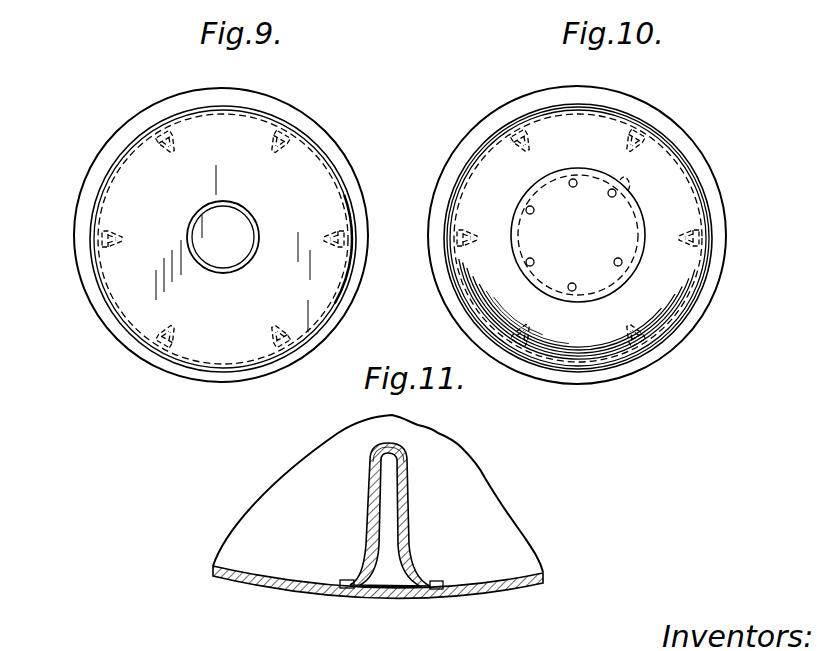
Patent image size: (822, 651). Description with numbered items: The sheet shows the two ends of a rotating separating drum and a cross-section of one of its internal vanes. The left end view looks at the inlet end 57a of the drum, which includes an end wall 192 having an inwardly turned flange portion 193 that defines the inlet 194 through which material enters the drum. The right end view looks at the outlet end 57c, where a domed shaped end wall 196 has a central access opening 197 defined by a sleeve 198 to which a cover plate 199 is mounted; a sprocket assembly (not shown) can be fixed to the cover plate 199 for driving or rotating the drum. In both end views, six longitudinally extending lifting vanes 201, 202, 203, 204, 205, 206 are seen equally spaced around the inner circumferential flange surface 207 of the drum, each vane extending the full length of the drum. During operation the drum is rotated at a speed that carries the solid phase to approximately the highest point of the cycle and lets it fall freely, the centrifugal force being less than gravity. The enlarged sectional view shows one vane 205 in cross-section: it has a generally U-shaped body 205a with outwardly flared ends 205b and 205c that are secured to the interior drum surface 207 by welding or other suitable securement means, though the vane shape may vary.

In FIG. 9, the end wall 192 is at (201, 353).
In FIG. 9, the inwardly turned flange portion 193 is at (222, 264).
In FIG. 9, the inlet 194 is at (245, 222).
In FIG. 10, the domed shaped end wall 196 is at (501, 172).
In FIG. 10, the central access opening 197 is at (628, 190).
In FIG. 10, the sleeve 198 is at (691, 168).
In FIG. 10, the cover plate 199 is at (594, 231).
In FIG. 9, the lifting vane 201 is at (176, 144).
In FIG. 10, the lifting vane 201 is at (631, 142).
In FIG. 9, the lifting vane 202 is at (280, 144).
In FIG. 10, the lifting vane 202 is at (529, 140).
In FIG. 9, the lifting vane 203 is at (328, 235).
In FIG. 10, the lifting vane 203 is at (467, 233).
In FIG. 9, the lifting vane 204 is at (302, 331).
In FIG. 10, the lifting vane 204 is at (522, 328).
In FIG. 9, the lifting vane 205 is at (142, 344).
In FIG. 10, the lifting vane 205 is at (633, 329).
In FIG. 11, the lifting vane 205 is at (397, 516).
In FIG. 11, the U-shaped body 205a is at (407, 472).
In FIG. 11, the outwardly flared end 205b is at (342, 579).
In FIG. 11, the outwardly flared end 205c is at (441, 580).
In FIG. 9, the lifting vane 206 is at (117, 237).
In FIG. 10, the lifting vane 206 is at (689, 235).
In FIG. 9, the inner circumferential flange surface 207 is at (258, 108).
In FIG. 11, the inner circumferential flange surface 207 is at (266, 580).
In FIG. 9, the inlet end 57a is at (330, 178).
In FIG. 10, the outlet end 57c is at (656, 290).